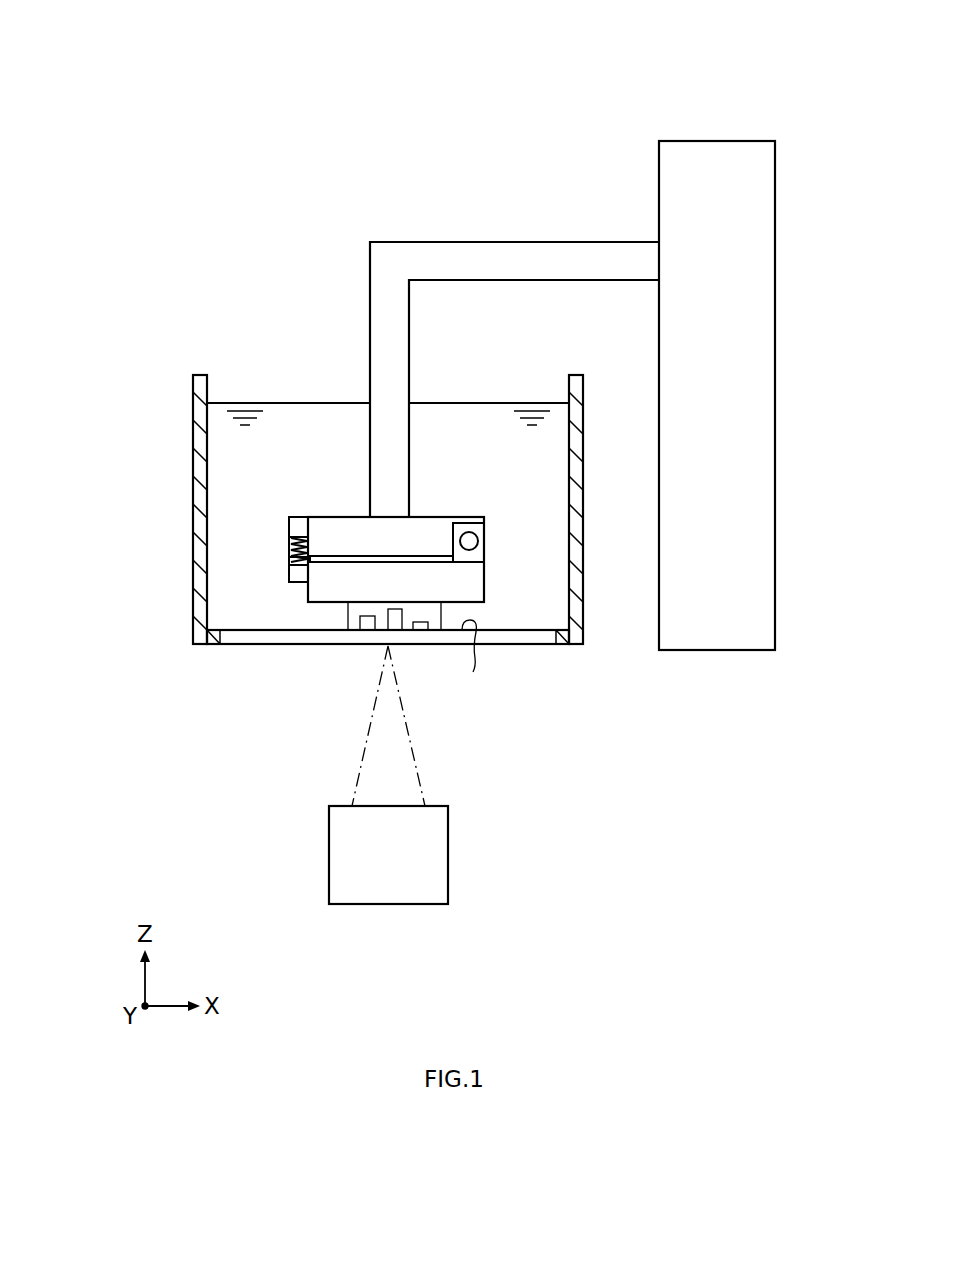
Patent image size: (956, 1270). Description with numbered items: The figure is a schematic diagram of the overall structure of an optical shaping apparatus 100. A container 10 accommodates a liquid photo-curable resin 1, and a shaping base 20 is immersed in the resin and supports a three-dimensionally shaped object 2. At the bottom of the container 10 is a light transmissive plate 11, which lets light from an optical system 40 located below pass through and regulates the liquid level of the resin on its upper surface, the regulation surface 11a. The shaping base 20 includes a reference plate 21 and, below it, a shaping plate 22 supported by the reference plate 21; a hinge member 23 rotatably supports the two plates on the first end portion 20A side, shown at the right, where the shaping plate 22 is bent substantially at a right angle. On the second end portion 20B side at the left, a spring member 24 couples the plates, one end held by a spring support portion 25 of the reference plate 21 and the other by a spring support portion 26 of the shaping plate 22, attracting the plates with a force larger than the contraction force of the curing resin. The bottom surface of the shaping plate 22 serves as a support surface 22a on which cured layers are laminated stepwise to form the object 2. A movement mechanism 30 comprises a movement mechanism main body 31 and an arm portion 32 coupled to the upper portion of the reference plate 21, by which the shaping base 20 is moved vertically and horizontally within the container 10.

The optical shaping apparatus 100 is at (492, 50).
The container 10 is at (199, 374).
The light transmissive plate 11 is at (312, 636).
The regulation surface 11a is at (482, 656).
The liquid photo-curable resin 1 is at (323, 413).
The three-dimensionally shaped object 2 is at (420, 626).
The shaping base 20 is at (382, 530).
The first end portion 20A is at (487, 517).
The second end portion 20B is at (289, 517).
The reference plate 21 is at (338, 517).
The shaping plate 22 is at (476, 578).
The support surface 22a is at (330, 602).
The hinge member 23 is at (478, 541).
The spring member 24 is at (290, 549).
The spring support portion 25 is at (290, 523).
The spring support portion 26 is at (290, 576).
The movement mechanism 30 is at (572, 378).
The movement mechanism main body 31 is at (715, 152).
The arm portion 32 is at (520, 253).
The optical system 40 is at (452, 847).